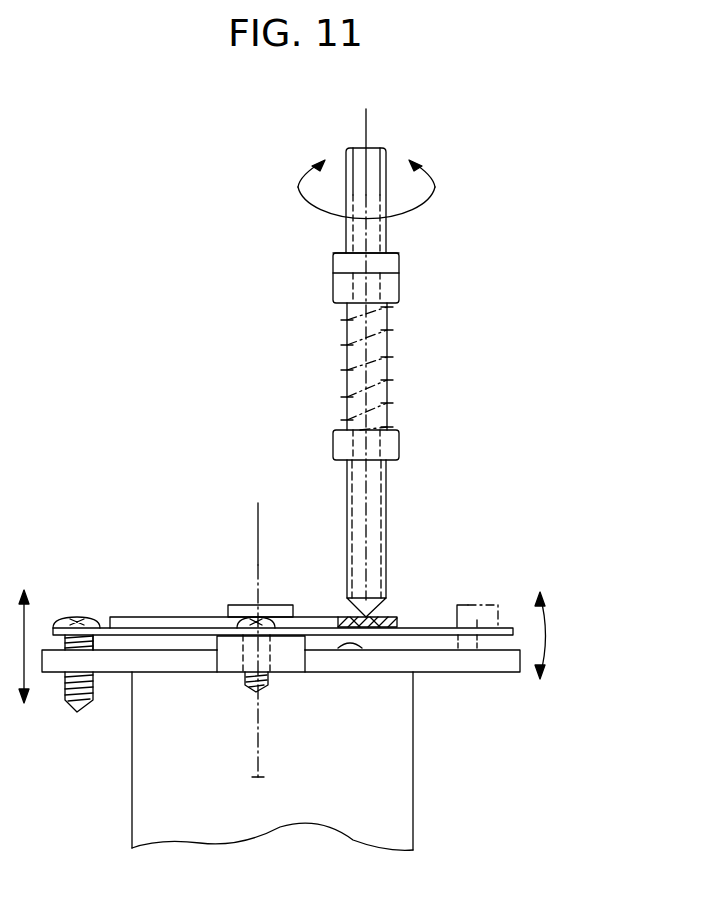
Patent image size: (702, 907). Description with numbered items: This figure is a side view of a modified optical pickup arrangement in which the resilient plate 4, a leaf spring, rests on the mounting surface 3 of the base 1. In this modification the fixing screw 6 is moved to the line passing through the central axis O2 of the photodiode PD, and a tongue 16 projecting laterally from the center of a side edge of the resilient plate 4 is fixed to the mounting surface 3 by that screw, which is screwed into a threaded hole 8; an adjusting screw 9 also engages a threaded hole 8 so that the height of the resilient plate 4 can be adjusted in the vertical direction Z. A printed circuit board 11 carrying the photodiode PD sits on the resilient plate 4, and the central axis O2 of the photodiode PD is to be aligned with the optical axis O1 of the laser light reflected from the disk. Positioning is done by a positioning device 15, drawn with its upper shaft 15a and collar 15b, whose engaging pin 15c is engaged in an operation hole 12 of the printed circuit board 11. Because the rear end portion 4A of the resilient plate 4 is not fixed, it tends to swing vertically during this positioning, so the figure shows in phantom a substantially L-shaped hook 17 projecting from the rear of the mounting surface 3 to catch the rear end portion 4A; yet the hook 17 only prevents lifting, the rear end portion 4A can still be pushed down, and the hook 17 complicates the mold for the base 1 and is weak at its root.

The base 1 is at (425, 825).
The mounting surface 3 is at (365, 628).
The resilient plate 4 is at (426, 612).
The rear end portion 4A is at (512, 627).
The fixing screw 6 is at (253, 683).
The threaded hole 8 is at (96, 665).
The adjusting screw 9 is at (77, 617).
The printed circuit board 11 is at (143, 617).
The operation hole 12 is at (377, 628).
The positioning device 15 is at (396, 363).
The screw shaft 15a is at (386, 153).
The upper collar 15b is at (333, 292).
The engaging pin 15c is at (376, 478).
The tongue 16 is at (283, 640).
The hook 17 is at (475, 605).
The optical axis O1 is at (257, 777).
The central axis O2 is at (258, 532).
The photodiode PD is at (283, 605).
The vertical direction Z is at (24, 652).